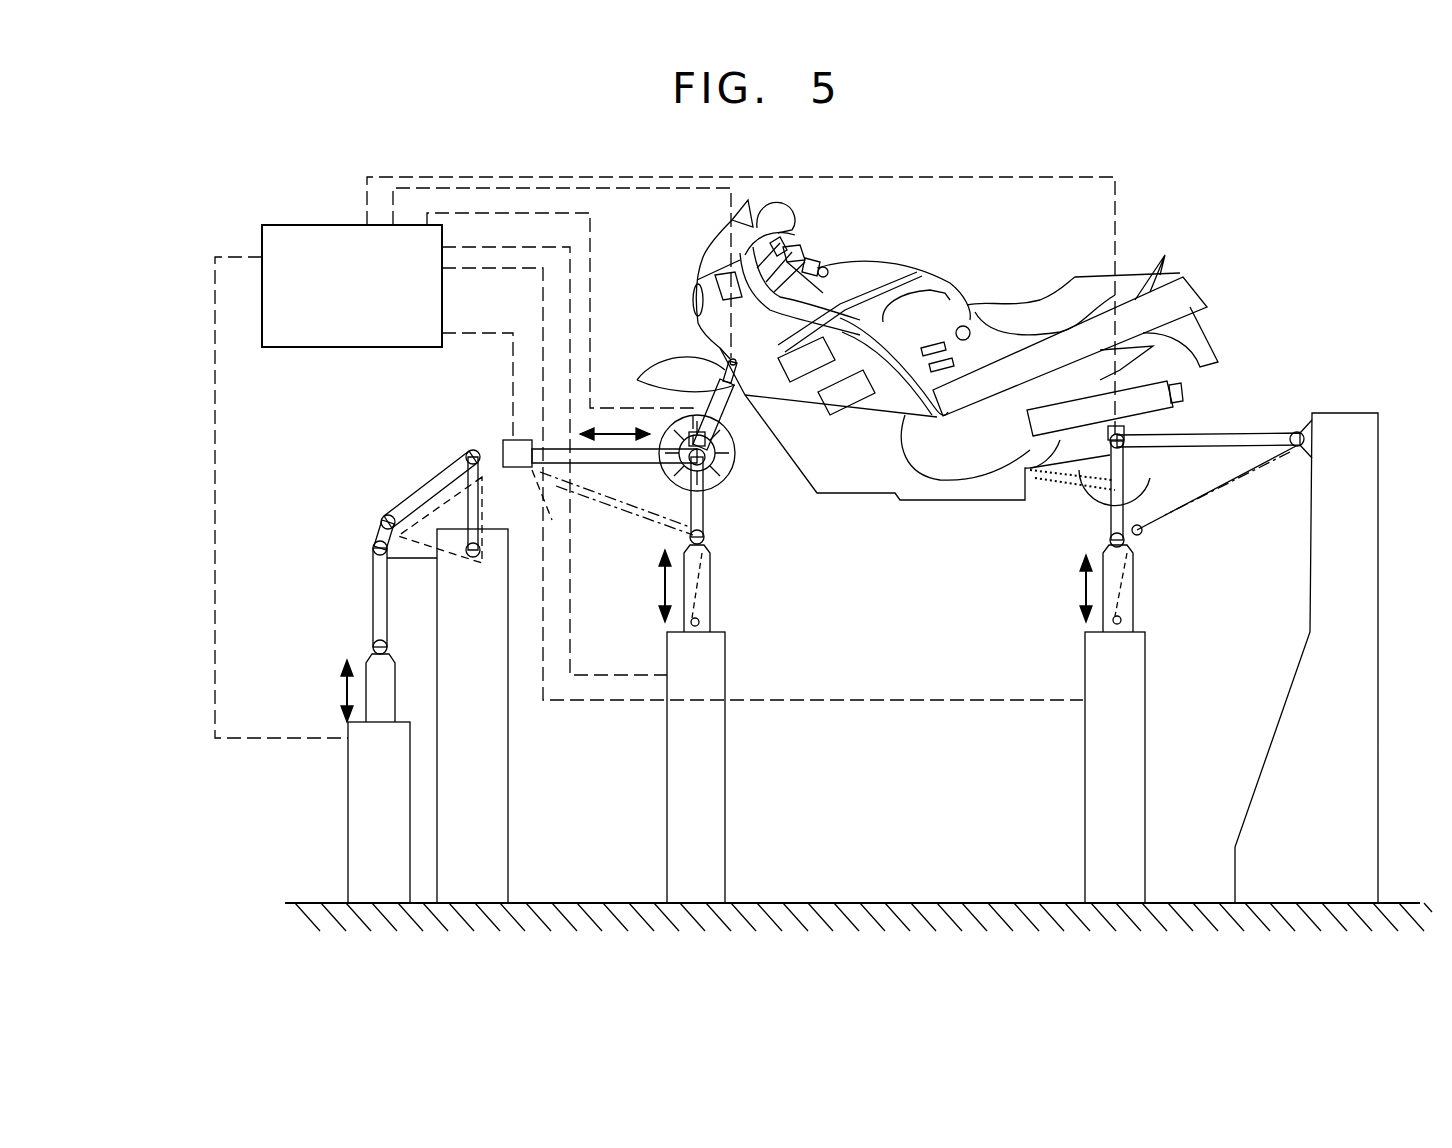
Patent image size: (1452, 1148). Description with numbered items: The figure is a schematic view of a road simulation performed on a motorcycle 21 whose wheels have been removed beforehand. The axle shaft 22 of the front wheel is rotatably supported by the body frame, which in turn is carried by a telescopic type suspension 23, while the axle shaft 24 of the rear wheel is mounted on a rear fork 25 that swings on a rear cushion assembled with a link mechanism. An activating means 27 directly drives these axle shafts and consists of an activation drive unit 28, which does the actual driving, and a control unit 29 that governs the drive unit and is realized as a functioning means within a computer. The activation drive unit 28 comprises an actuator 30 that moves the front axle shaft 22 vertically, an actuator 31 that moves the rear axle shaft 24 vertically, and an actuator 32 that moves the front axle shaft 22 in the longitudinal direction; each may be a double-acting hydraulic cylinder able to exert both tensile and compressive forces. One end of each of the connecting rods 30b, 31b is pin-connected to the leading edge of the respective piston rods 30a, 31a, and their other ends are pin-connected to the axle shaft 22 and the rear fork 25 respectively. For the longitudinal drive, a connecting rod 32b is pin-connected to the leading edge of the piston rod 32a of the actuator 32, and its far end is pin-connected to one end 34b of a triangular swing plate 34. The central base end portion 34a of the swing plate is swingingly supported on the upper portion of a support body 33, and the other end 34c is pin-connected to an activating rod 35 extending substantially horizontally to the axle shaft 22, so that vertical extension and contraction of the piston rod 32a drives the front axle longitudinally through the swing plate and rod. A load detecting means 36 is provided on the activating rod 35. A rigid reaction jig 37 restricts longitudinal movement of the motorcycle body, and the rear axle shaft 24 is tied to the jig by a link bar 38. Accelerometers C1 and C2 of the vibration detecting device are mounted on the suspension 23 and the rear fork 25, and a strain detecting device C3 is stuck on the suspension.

The motorcycle 21 is at (968, 275).
The axle shaft of a front wheel 22 is at (720, 478).
The telescopic type suspension 23 is at (690, 368).
The axle shaft of a rear wheel 24 is at (1080, 475).
The rear fork 25 is at (1055, 470).
The activating means 27 is at (205, 205).
The activation drive unit 28 is at (274, 522).
The control unit 29 is at (262, 225).
The actuator 30 is at (723, 815).
The piston rod 30a is at (710, 598).
The connecting rod 30b is at (705, 525).
The actuator 31 is at (1083, 823).
The piston rod 31a is at (1135, 605).
The connecting rod 31b is at (1130, 452).
The actuator 32 is at (348, 835).
The piston rod 32a is at (367, 660).
The connecting rod 32b is at (372, 580).
The support body 33 is at (508, 810).
The swing plate 34 is at (437, 493).
The central base end portion 34a is at (473, 560).
The one end of the swing plate 34b is at (378, 545).
The other end of the swing plate 34c is at (473, 450).
The activating rod 35 is at (620, 468).
The load detecting means 36 is at (512, 440).
The reaction jig 37 is at (1310, 647).
The link bar 38 is at (1233, 450).
The accelerometer C1 is at (728, 458).
The accelerometer C2 is at (1110, 440).
The strain detecting device C3 is at (728, 355).